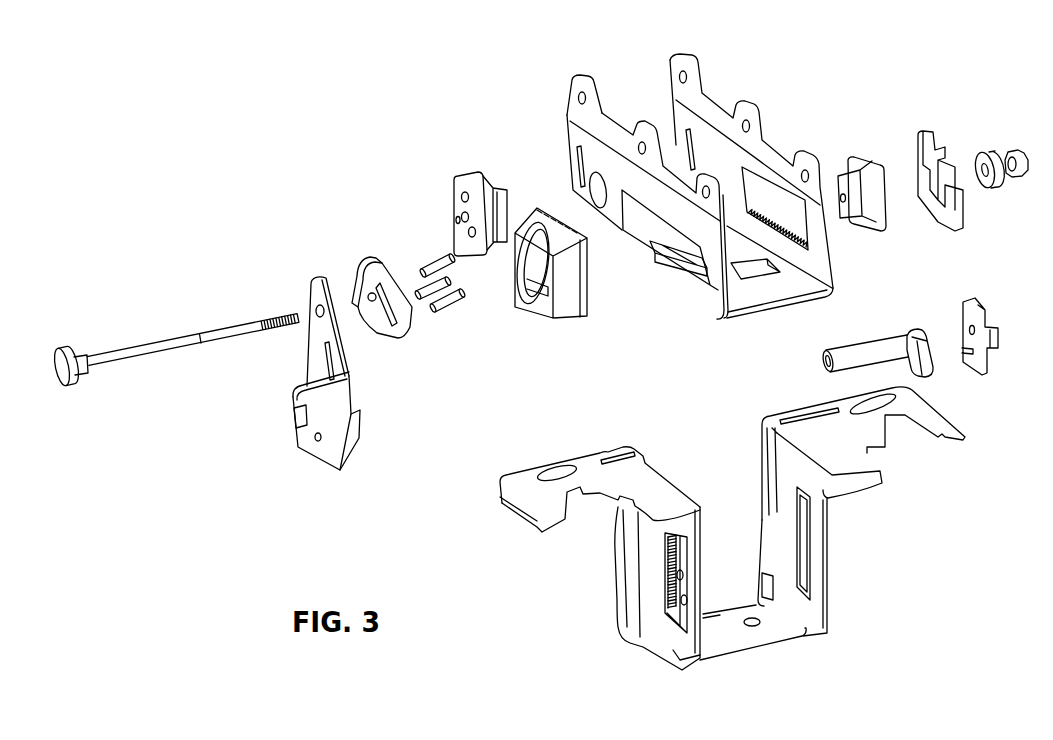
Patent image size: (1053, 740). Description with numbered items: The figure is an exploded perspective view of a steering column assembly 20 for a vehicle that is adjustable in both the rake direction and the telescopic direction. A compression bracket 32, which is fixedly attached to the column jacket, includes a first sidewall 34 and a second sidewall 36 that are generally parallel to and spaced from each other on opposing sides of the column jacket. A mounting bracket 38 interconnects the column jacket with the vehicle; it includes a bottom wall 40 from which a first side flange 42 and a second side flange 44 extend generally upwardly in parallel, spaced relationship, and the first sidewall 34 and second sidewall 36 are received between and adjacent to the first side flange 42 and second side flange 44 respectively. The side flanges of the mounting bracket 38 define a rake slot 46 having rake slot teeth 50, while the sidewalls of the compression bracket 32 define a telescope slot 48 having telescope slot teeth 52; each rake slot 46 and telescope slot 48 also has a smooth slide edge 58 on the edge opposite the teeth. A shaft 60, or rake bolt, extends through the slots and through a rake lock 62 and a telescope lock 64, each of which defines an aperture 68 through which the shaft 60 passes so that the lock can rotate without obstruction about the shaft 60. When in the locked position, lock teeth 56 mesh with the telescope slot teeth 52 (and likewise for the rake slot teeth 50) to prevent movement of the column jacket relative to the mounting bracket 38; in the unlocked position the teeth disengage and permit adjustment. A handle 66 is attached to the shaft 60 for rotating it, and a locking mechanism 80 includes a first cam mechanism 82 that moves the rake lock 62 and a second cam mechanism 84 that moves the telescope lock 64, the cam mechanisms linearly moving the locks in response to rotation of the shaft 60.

The steering column assembly 20 is at (804, 72).
The compression bracket 32 is at (778, 182).
The first sidewall 34 is at (710, 292).
The second sidewall 36 is at (838, 281).
The mounting bracket 38 is at (520, 524).
The bottom wall 40 is at (720, 541).
The first side flange 42 is at (660, 595).
The second side flange 44 is at (825, 540).
The rake slot 46 is at (688, 603).
The telescope slot 48 is at (765, 190).
The rake slot teeth 50 is at (670, 587).
The telescope slot teeth 52 is at (812, 238).
The lock teeth 56 is at (858, 219).
The slide edge 58 is at (652, 250).
The shaft 60 is at (173, 340).
The rake lock 62 is at (468, 177).
The telescope lock 64 is at (869, 196).
The handle 66 is at (328, 450).
The aperture 68 is at (457, 219).
The locking mechanism 80 is at (300, 351).
The first cam mechanism 82 is at (364, 257).
The second cam mechanism 84 is at (907, 324).